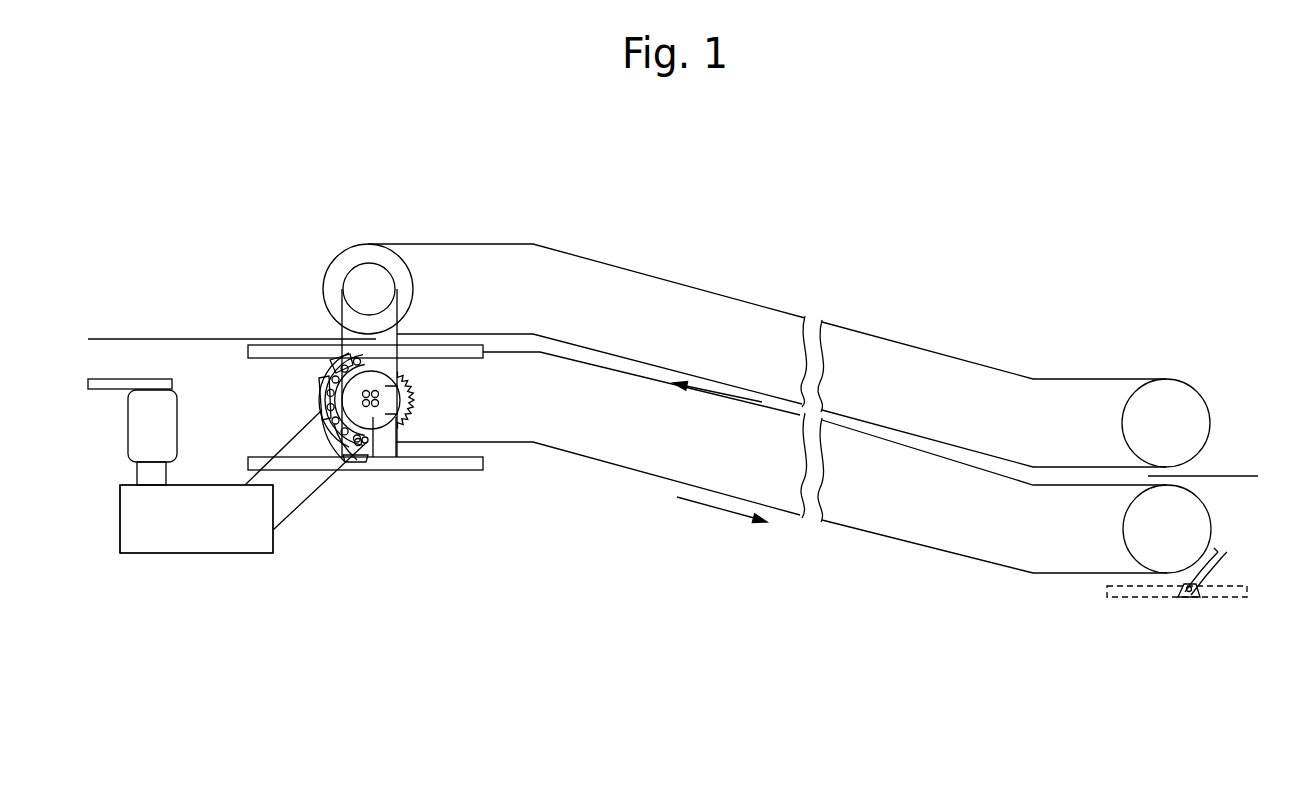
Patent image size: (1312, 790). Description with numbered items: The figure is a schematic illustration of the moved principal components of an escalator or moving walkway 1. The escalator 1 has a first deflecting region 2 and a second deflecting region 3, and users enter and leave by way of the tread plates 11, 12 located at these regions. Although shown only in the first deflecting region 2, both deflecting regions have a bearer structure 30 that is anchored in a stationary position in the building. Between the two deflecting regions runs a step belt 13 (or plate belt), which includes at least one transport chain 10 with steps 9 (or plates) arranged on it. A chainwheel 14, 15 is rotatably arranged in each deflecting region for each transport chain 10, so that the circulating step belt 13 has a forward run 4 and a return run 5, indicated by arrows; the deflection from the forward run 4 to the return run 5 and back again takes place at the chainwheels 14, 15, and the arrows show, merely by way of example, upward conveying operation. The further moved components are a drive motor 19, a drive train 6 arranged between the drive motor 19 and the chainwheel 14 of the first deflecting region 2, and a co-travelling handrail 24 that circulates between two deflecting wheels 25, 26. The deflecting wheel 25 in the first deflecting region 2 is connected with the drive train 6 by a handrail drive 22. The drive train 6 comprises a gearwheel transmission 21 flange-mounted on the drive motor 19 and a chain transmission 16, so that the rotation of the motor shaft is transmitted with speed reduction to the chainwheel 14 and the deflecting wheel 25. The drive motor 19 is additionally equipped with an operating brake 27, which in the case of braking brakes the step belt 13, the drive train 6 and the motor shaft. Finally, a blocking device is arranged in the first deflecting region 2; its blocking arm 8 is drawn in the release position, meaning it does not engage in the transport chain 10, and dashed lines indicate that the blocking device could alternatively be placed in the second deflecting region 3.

The escalator 1 is at (822, 273).
The first deflecting region 2 is at (408, 493).
The second deflecting region 3 is at (1240, 538).
The forward run 4 is at (708, 387).
The return run 5 is at (735, 508).
The drive train 6 is at (204, 574).
The blocking arm 8 is at (322, 440).
The steps 9 is at (318, 382).
The transport chain 10 is at (322, 365).
The tread plate 11 is at (165, 338).
The tread plate 12 is at (1218, 475).
The step belt 13 is at (910, 453).
The chainwheel 14 is at (418, 395).
The chainwheel 15 is at (1182, 520).
The chain transmission 16 is at (328, 528).
The drive motor 19 is at (140, 452).
The gearwheel transmission 21 is at (252, 538).
The handrail drive 22 is at (330, 313).
The handrail 24 is at (533, 245).
The deflecting wheel 25 is at (343, 250).
The deflecting wheel 26 is at (1187, 378).
The operating brake 27 is at (113, 388).
The bearer structure 30 is at (460, 470).